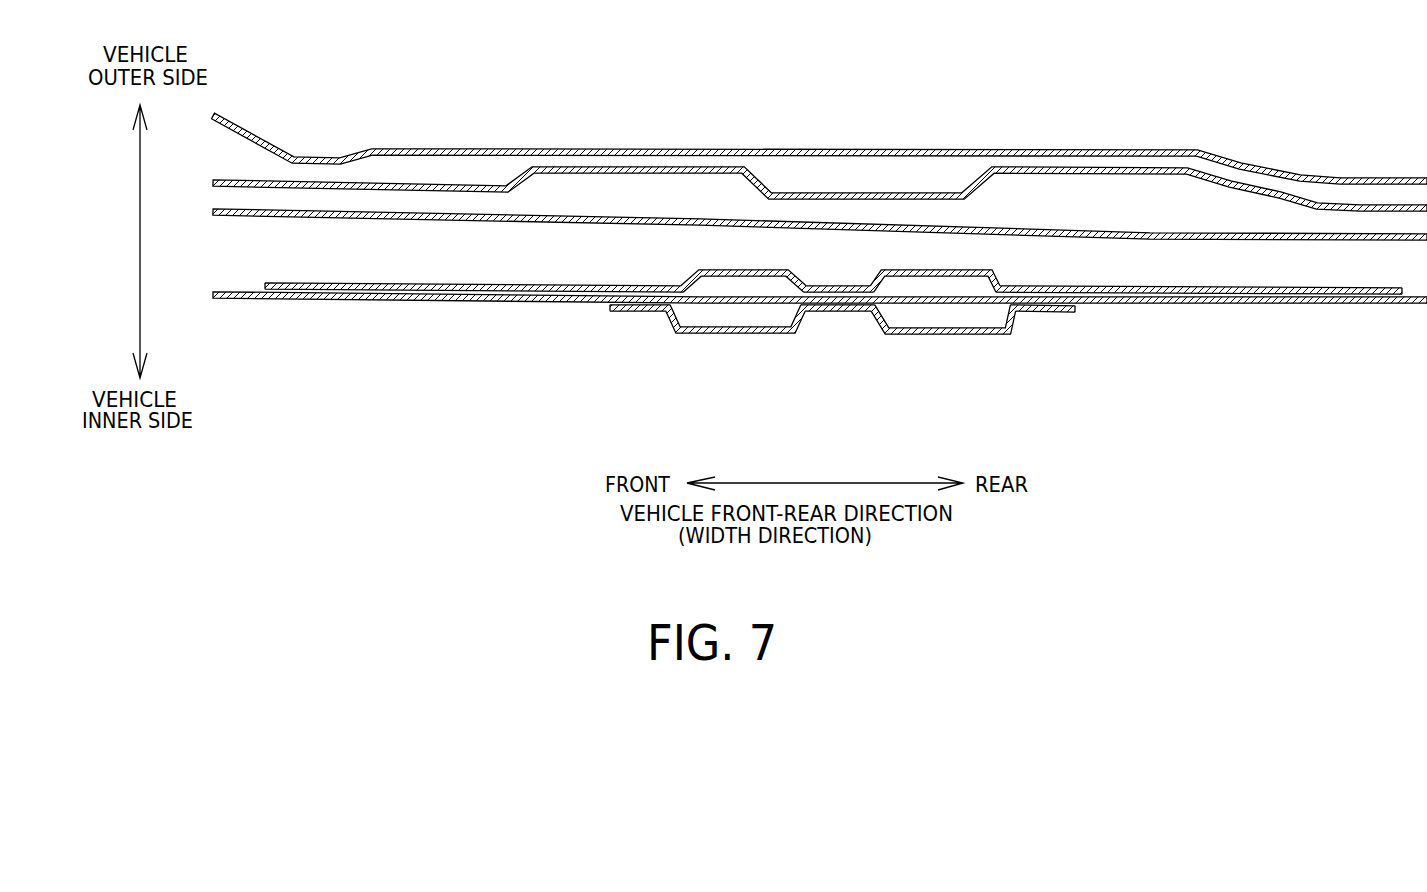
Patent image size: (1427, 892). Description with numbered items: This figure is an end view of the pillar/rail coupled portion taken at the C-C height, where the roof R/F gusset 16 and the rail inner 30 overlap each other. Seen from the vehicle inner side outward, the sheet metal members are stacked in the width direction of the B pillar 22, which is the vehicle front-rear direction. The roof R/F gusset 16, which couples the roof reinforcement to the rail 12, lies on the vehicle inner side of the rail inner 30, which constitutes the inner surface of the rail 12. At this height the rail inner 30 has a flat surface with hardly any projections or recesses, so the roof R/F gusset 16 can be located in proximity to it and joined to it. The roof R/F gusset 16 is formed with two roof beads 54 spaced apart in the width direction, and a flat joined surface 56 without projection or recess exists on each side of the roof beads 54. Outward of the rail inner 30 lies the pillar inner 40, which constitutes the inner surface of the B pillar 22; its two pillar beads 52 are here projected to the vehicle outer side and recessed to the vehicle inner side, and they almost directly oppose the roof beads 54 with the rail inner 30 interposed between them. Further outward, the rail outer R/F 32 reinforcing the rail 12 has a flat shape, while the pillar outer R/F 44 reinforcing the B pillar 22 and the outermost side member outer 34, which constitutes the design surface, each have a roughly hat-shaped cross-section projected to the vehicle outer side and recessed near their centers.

The rail 12 is at (820, 225).
The rail inner 30 is at (240, 303).
The rail outer R/F 32 is at (563, 218).
The side member outer 34 is at (733, 150).
The B pillar 22 is at (820, 174).
The pillar inner 40 is at (418, 283).
The pillar outer R/F 44 is at (650, 166).
The pillar bead 52 is at (737, 270).
The roof R/F gusset 16 is at (842, 368).
The roof bead 54 is at (700, 335).
The joined surface 56 is at (631, 313).